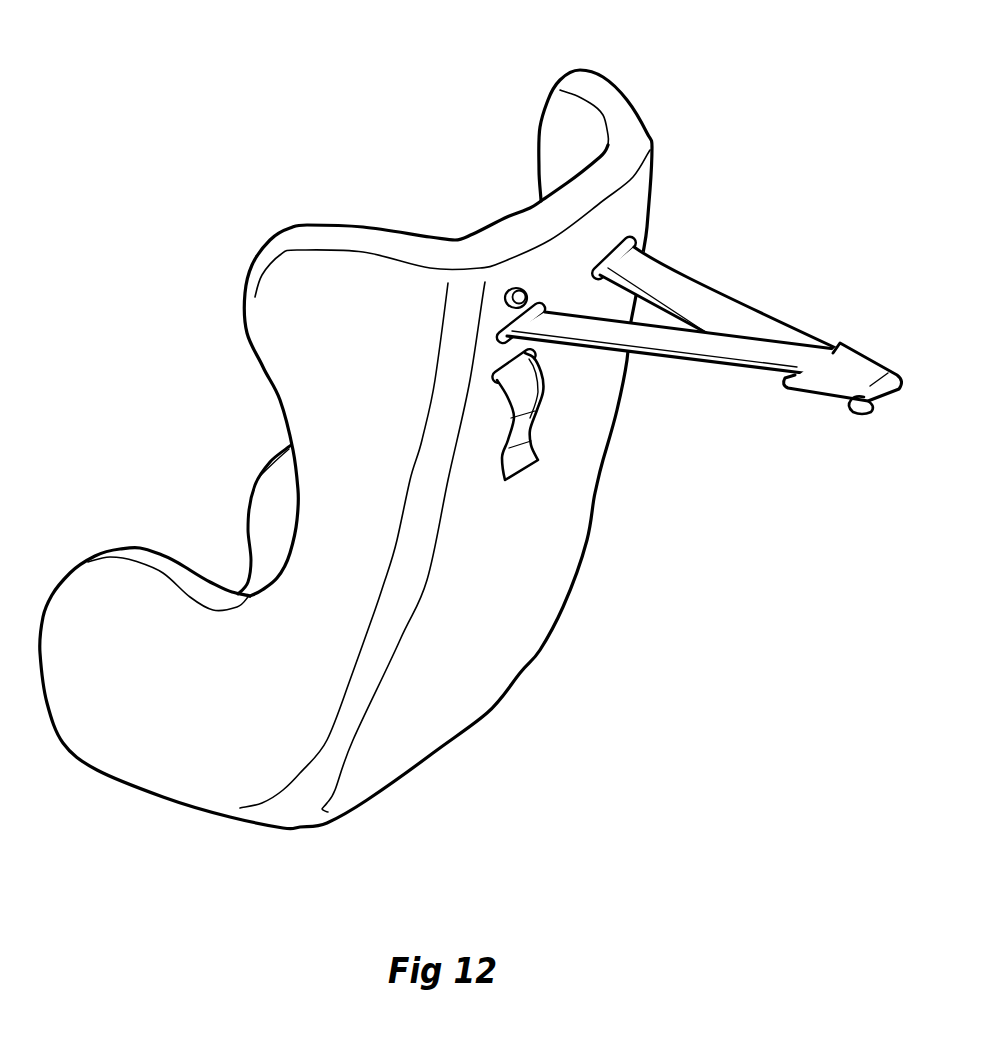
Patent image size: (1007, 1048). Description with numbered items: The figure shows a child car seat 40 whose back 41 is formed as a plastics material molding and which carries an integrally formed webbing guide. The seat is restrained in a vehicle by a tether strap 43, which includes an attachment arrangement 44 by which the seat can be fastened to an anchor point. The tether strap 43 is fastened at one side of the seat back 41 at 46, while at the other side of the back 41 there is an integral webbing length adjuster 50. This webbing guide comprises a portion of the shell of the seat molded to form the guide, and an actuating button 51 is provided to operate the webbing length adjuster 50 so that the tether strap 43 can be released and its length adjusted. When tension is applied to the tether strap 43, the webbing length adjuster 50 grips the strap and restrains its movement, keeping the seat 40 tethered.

The child car seat 40 is at (207, 537).
The back 41 is at (622, 140).
The tether strap 43 is at (700, 307).
The attachment arrangement 44 is at (863, 373).
The fastening location of tether strap 46 is at (617, 233).
The webbing length adjuster 50 is at (553, 357).
The actuating button 51 is at (518, 287).